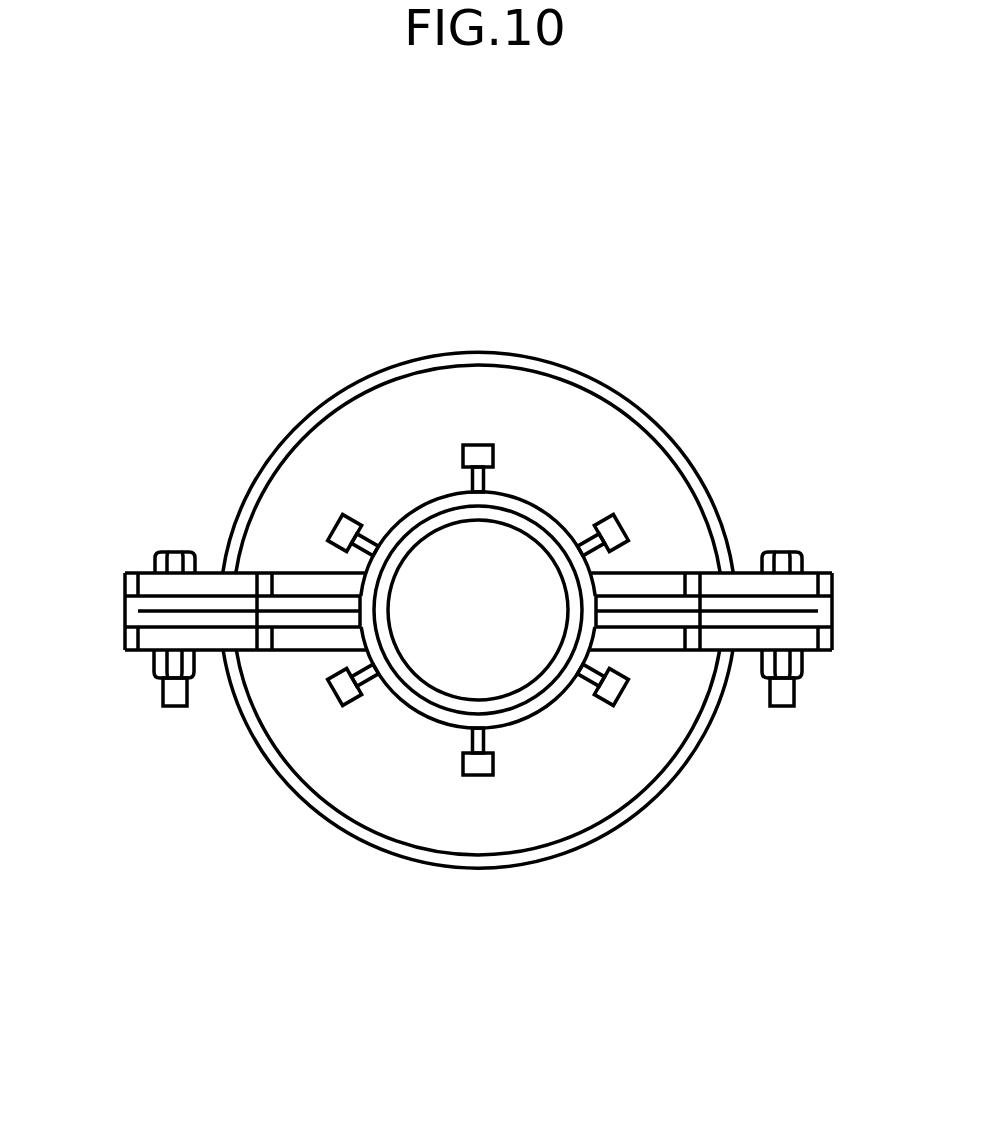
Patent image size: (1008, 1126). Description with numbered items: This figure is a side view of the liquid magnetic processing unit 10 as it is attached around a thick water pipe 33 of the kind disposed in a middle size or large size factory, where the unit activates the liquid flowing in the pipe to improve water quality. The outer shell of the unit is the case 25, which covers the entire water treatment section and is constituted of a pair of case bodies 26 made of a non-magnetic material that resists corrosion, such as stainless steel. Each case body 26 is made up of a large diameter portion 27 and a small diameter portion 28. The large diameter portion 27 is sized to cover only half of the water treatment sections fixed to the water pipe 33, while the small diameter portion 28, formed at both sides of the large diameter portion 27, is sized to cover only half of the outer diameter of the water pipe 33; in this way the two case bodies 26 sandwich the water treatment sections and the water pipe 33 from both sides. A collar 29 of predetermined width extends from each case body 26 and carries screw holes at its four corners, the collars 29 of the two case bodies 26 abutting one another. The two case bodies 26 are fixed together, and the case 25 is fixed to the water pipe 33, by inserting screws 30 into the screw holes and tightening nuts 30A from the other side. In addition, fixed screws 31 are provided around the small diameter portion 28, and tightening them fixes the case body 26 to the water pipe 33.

The liquid magnetic processing unit 10 is at (644, 303).
The case 25 is at (647, 411).
The case body 26 is at (478, 629).
The large diameter portion 27 is at (305, 810).
The small diameter portion 28 is at (566, 698).
The collar 29 is at (208, 572).
The screw 30 is at (170, 552).
The nut 30A is at (152, 672).
The fixed screw 31 is at (473, 445).
The water pipe 33 is at (542, 655).